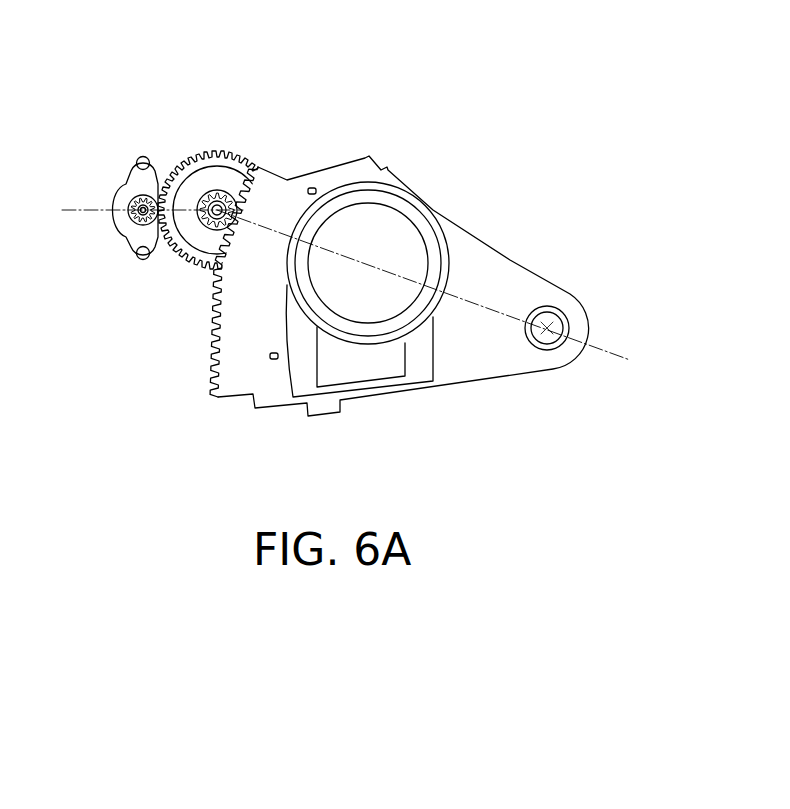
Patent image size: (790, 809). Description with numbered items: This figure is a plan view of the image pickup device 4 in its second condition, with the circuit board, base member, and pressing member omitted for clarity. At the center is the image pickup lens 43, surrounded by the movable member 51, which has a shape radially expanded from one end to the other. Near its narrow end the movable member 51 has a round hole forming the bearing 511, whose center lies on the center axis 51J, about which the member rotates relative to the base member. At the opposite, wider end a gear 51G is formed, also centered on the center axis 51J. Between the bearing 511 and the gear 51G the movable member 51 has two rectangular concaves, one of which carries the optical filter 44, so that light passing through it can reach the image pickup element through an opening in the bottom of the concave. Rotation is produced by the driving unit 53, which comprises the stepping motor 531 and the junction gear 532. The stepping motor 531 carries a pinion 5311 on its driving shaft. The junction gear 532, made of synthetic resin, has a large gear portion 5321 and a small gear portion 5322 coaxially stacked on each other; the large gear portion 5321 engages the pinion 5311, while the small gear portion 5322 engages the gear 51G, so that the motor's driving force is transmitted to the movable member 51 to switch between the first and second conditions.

The image pickup device 4 is at (570, 111).
The image pickup lens 43 is at (378, 237).
The optical filter 44 is at (372, 368).
The movable member 51 is at (513, 283).
The gear 51G is at (208, 390).
The center axis 51J is at (563, 317).
The bearing 511 is at (552, 350).
The driving unit 53 is at (172, 139).
The stepping motor 531 is at (122, 193).
The pinion 5311 is at (128, 226).
The junction gear 532 is at (297, 32).
The large gear portion 5321 is at (197, 150).
The small gear portion 5322 is at (217, 190).